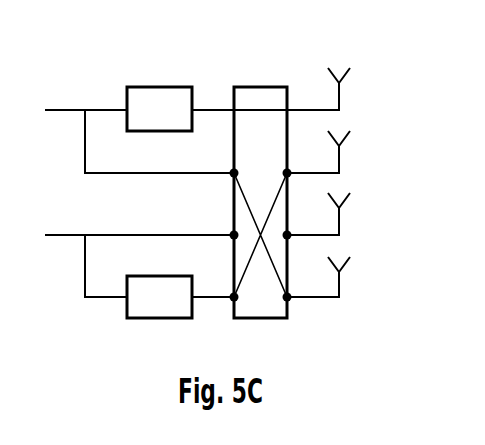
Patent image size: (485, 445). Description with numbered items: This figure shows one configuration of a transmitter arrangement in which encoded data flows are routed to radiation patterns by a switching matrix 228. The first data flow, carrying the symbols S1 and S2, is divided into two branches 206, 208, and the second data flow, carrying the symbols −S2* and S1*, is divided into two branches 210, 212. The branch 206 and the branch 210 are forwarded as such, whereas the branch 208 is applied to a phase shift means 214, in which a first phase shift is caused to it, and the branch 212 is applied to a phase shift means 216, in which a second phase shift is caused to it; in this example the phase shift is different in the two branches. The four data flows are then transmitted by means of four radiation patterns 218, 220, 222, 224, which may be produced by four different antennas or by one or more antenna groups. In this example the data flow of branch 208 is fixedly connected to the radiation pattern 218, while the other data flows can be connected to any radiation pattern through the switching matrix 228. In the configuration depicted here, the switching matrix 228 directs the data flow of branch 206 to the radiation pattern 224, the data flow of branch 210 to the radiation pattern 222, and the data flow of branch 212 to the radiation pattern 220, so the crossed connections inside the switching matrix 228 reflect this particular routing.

The branch 206 is at (85, 139).
The branch 208 is at (108, 107).
The branch 210 is at (177, 233).
The branch 212 is at (85, 280).
The phase shift means 214 is at (172, 87).
The phase shift means 216 is at (172, 318).
The radiation pattern 218 is at (342, 98).
The radiation pattern 220 is at (342, 162).
The radiation pattern 222 is at (342, 222).
The radiation pattern 224 is at (342, 285).
The switching matrix 228 is at (272, 86).